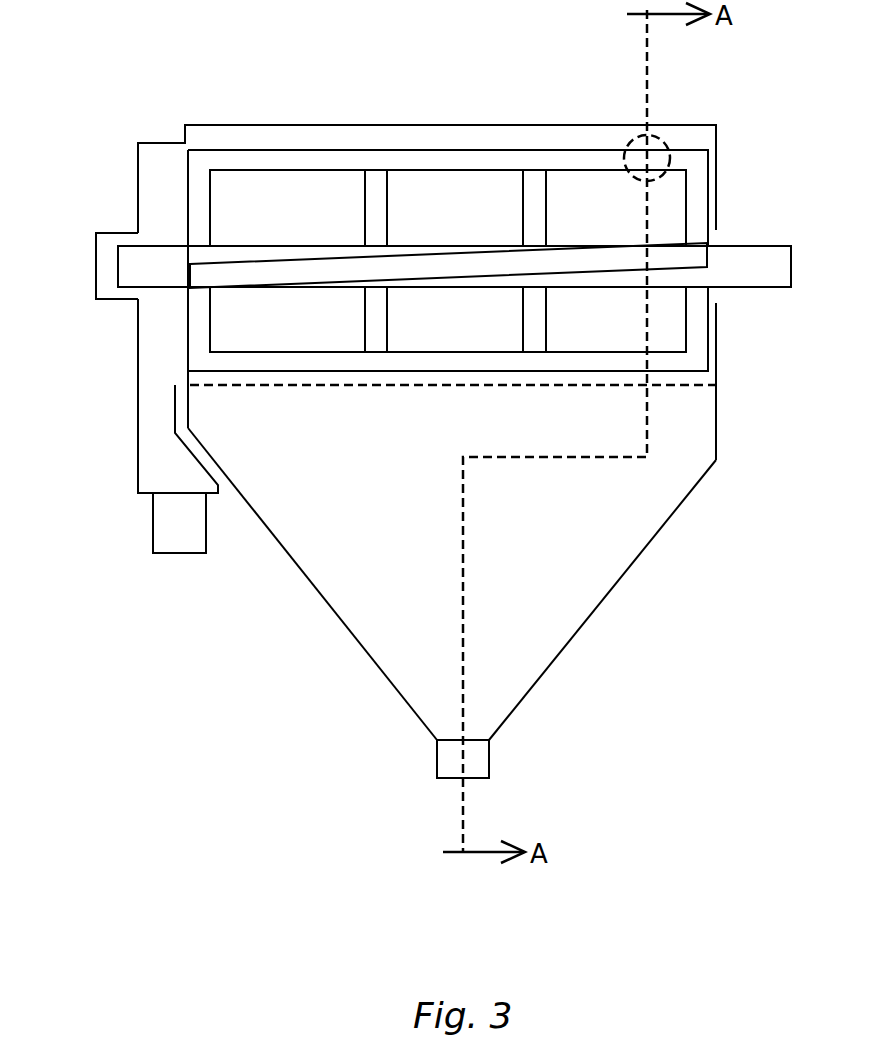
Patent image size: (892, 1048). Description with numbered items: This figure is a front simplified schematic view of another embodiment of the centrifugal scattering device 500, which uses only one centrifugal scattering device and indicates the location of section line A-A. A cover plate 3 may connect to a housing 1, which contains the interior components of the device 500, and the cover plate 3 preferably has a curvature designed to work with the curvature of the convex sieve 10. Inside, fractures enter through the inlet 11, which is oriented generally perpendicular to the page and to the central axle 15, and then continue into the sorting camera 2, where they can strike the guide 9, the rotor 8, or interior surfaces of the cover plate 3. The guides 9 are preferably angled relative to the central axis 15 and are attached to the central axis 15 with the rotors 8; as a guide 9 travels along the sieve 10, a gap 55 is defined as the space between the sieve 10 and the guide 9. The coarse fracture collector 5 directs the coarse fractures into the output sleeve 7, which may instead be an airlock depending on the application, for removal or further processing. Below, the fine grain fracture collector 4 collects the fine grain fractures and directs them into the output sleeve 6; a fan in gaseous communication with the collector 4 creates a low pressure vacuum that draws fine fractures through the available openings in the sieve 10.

The centrifugal scattering device 500 is at (745, 198).
The housing 1 is at (110, 300).
The sorting camera 2 is at (237, 140).
The cover plate 3 is at (377, 125).
The fine grain fracture collector 4 is at (595, 570).
The coarse fracture collector 5 is at (150, 380).
The output sleeve 6 is at (448, 760).
The output sleeve 7 is at (163, 523).
The rotor 8 is at (373, 207).
The guide 9 is at (406, 263).
The sieve 10 is at (563, 386).
The inlet 11 is at (625, 152).
The central axis 15 is at (160, 253).
The gap 55 is at (281, 375).